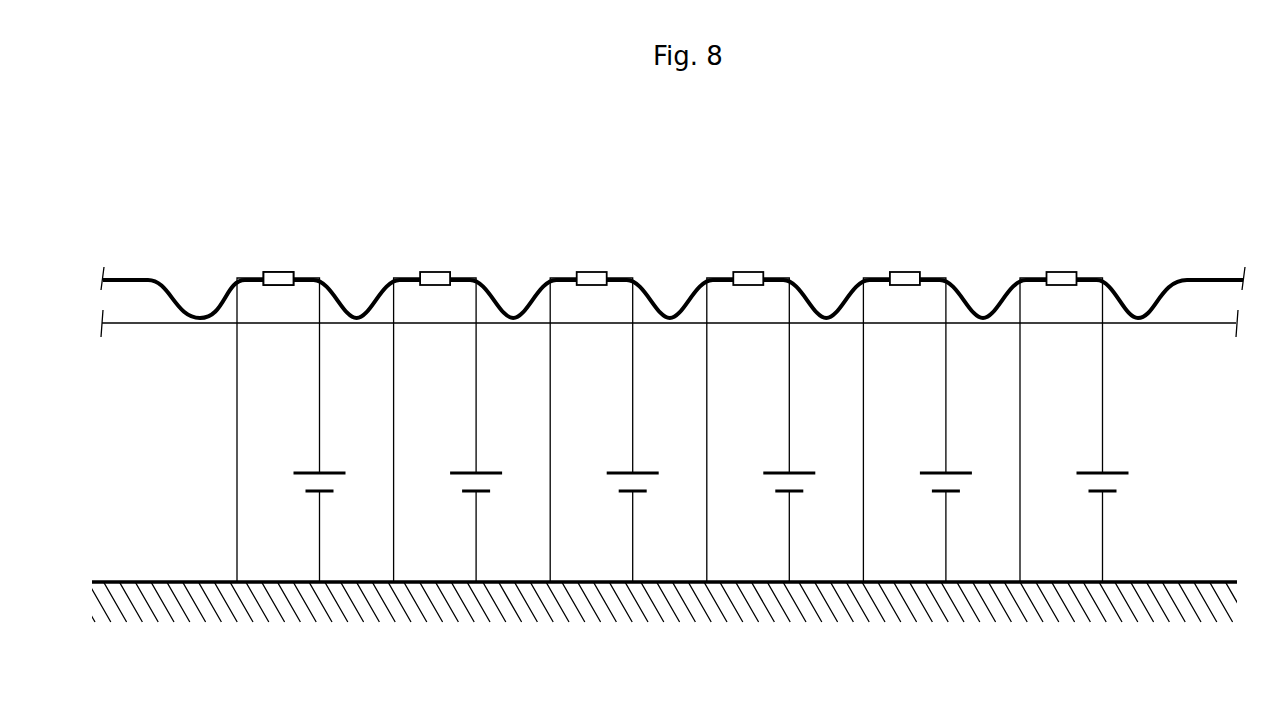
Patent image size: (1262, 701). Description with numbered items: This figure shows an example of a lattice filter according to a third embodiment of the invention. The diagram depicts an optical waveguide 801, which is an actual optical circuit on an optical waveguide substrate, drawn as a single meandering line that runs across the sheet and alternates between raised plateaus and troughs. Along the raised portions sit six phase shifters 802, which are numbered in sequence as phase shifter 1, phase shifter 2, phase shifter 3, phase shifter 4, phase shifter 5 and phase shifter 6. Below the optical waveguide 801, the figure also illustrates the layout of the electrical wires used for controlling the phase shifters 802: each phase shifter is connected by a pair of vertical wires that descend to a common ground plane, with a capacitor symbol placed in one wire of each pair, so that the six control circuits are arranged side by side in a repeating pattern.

The first stage resistor 1 is at (291, 410).
The second stage resistor 2 is at (448, 410).
The third stage resistor 3 is at (604, 410).
The fourth stage resistor 4 is at (761, 410).
The fifth stage resistor 5 is at (917, 410).
The sixth stage resistor 6 is at (1074, 410).
The optical waveguide 801 is at (1184, 280).
The phase shifter 802 is at (289, 270).